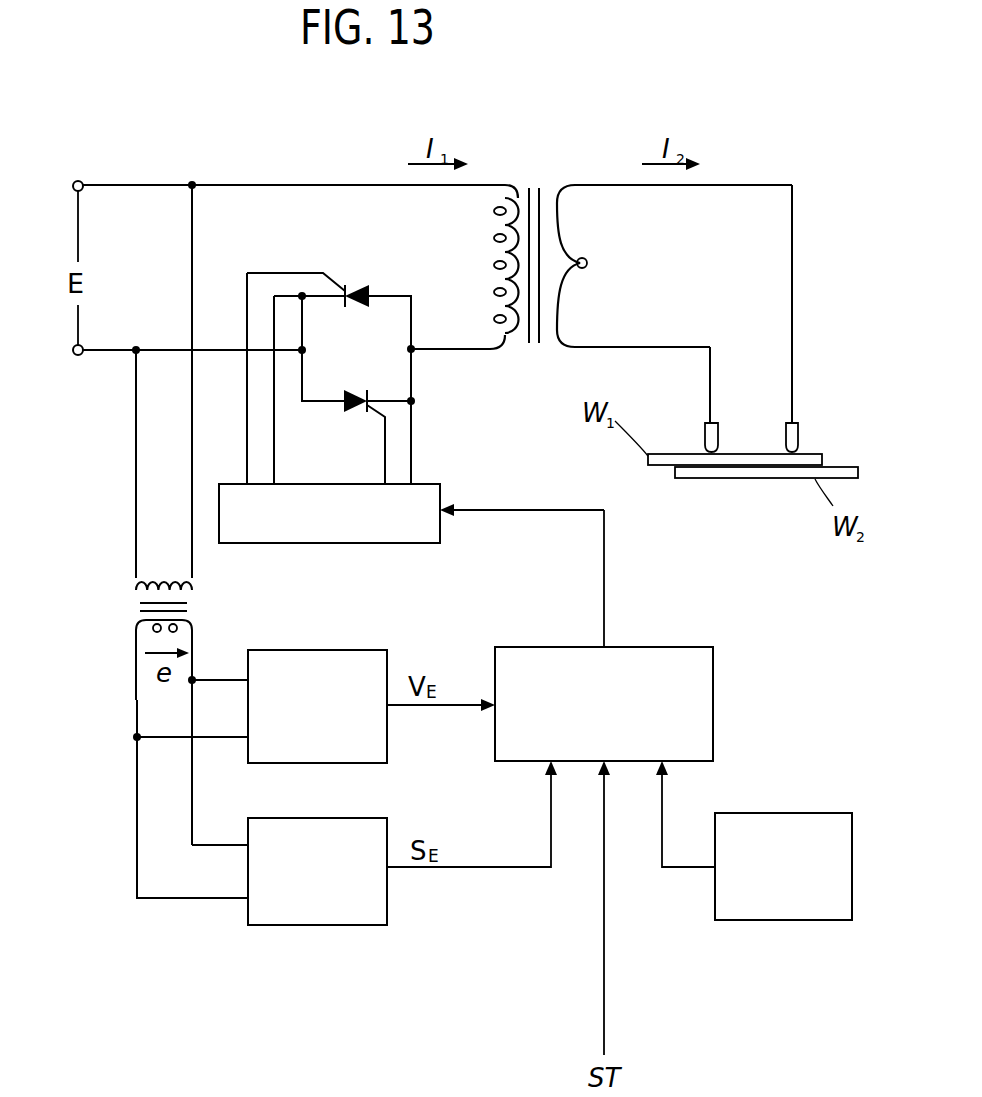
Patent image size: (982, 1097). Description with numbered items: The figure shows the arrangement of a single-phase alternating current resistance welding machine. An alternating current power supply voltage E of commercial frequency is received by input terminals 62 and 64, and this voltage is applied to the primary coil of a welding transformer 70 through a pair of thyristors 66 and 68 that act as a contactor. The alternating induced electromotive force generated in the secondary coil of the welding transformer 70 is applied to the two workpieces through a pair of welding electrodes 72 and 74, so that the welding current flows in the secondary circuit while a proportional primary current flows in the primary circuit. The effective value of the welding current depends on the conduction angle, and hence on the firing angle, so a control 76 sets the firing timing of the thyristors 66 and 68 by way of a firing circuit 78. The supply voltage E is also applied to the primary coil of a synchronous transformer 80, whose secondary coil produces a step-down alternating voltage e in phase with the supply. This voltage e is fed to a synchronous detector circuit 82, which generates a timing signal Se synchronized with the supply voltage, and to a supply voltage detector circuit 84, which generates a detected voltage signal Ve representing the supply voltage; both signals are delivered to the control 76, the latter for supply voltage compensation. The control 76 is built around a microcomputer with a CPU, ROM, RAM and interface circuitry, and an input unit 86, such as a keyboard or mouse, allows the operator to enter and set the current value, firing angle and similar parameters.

The input terminal 62 is at (78, 181).
The input terminal 64 is at (80, 356).
The thyristor 66 is at (357, 283).
The thyristor 68 is at (352, 414).
The welding transformer 70 is at (535, 178).
The welding electrode 72 is at (800, 436).
The welding electrode 74 is at (705, 432).
The control 76 is at (688, 647).
The firing circuit 78 is at (431, 484).
The synchronous transformer 80 is at (122, 607).
The synchronous detector circuit 82 is at (313, 926).
The supply voltage detector circuit 84 is at (348, 650).
The input unit 86 is at (792, 813).